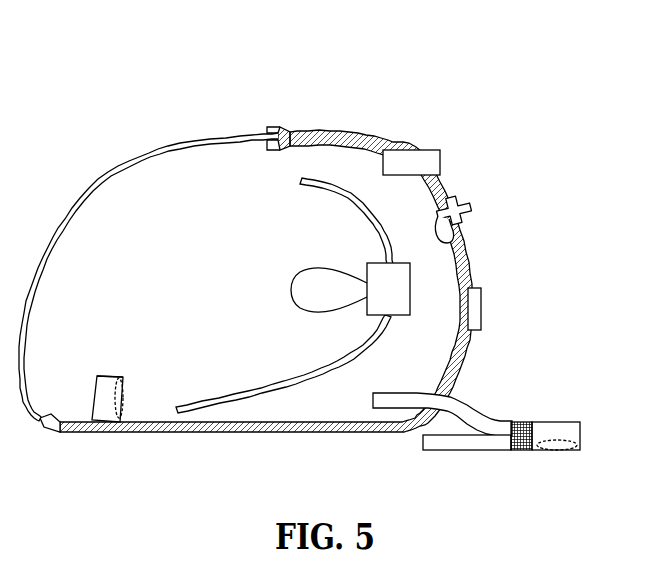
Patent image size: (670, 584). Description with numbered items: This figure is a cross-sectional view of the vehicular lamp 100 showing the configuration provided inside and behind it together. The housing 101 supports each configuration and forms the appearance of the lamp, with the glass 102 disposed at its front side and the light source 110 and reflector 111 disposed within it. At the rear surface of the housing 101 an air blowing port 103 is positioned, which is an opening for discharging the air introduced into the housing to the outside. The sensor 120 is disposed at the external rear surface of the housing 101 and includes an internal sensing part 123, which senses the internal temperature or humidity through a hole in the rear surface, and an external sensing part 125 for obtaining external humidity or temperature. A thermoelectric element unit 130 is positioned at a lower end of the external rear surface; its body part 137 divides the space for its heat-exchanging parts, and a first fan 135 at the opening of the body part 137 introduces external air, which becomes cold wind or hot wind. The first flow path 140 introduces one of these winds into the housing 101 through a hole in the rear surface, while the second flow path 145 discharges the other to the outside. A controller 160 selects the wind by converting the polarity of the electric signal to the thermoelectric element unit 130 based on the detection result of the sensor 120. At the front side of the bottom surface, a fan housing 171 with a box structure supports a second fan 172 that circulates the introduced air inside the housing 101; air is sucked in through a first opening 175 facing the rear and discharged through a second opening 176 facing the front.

The vehicular lamp 100 is at (279, 29).
The housing 101 is at (462, 349).
The glass 102 is at (68, 218).
The air blowing port 103 is at (441, 161).
The light source 110 is at (303, 278).
The reflector 111 is at (314, 187).
The sensor 120 is at (510, 220).
The internal sensing part 123 is at (452, 234).
The external sensing part 125 is at (471, 206).
The thermoelectric element unit 130 is at (518, 451).
The first fan 135 is at (547, 451).
The body part 137 is at (573, 450).
The first flow path 140 is at (468, 410).
The second flow path 145 is at (457, 450).
The controller 160 is at (481, 304).
The fan housing 171 is at (111, 356).
The second fan 172 is at (125, 397).
The first opening 175 is at (125, 382).
The second opening 176 is at (95, 387).